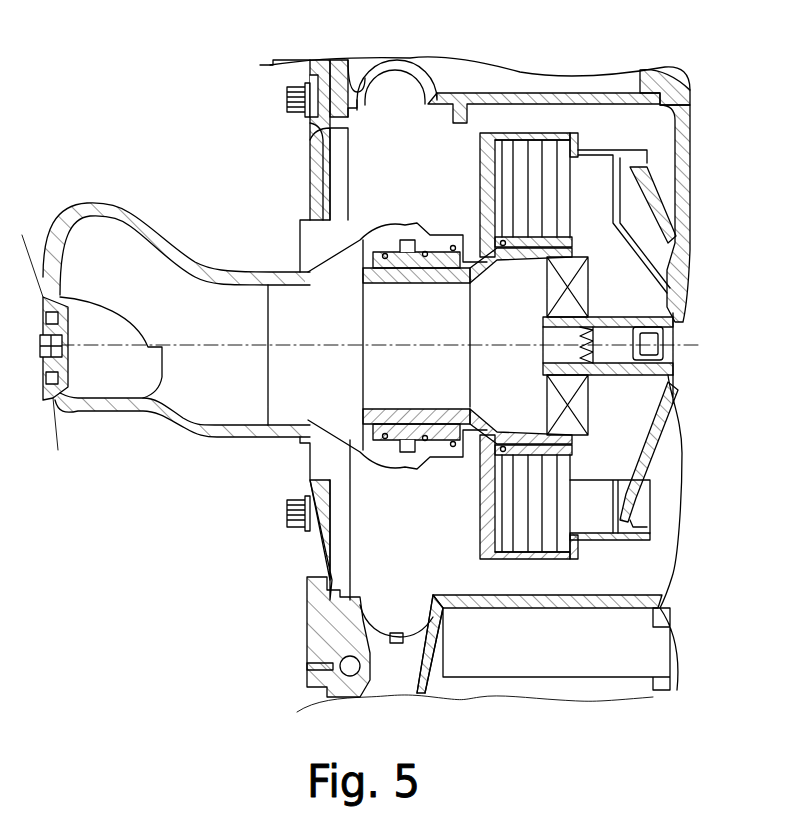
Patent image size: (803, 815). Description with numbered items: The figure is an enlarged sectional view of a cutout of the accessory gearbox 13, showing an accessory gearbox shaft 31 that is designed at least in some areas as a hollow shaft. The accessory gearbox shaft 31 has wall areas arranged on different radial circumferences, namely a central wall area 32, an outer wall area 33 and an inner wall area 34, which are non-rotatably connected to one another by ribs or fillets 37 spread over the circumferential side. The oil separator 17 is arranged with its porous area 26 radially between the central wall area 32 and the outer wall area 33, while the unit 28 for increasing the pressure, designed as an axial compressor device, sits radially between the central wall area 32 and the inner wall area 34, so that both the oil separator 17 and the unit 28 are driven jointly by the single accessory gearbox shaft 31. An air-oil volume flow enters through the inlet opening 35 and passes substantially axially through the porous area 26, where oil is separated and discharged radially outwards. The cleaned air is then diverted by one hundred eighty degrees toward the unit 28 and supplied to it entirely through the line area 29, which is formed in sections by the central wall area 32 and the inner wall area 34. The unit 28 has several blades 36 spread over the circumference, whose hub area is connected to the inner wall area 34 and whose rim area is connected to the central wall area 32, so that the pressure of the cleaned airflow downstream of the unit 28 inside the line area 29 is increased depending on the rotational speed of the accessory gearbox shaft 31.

The accessory gearbox 13 is at (503, 92).
The oil separator 17 is at (560, 130).
The porous area 26 is at (585, 195).
The unit for increasing the pressure 28 is at (598, 394).
The line area 29 is at (491, 444).
The accessory gearbox shaft 31 is at (632, 313).
The central wall area 32 is at (590, 308).
The outer wall area 33 is at (510, 130).
The inner wall area 34 is at (672, 292).
The inlet opening 35 is at (350, 676).
The blades 36 is at (582, 418).
The ribs or fillets 37 is at (643, 387).